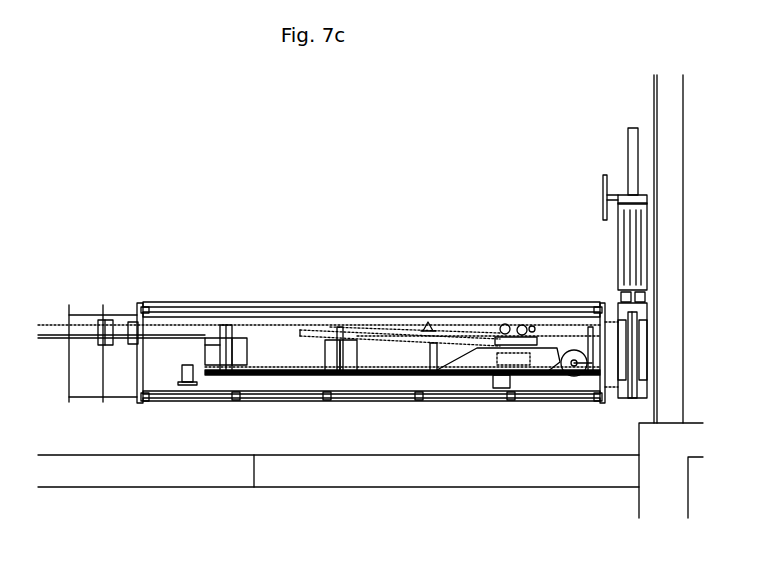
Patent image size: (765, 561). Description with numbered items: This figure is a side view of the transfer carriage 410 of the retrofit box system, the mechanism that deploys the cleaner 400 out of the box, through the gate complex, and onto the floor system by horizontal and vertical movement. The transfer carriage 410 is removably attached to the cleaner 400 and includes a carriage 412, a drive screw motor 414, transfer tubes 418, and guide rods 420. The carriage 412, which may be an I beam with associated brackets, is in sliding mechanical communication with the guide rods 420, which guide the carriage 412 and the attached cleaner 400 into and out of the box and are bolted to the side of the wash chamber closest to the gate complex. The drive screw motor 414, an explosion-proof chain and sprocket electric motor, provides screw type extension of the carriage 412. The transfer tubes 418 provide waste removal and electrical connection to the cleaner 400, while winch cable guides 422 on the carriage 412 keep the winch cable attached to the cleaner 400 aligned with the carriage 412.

The cleaner 400 is at (543, 350).
The transfer carriage 410 is at (482, 376).
The carriage 412 is at (292, 368).
The drive screw motor 414 is at (188, 365).
The transfer tubes 418 is at (205, 332).
The guide rods 420 is at (373, 330).
The winch cable guides 422 is at (428, 326).